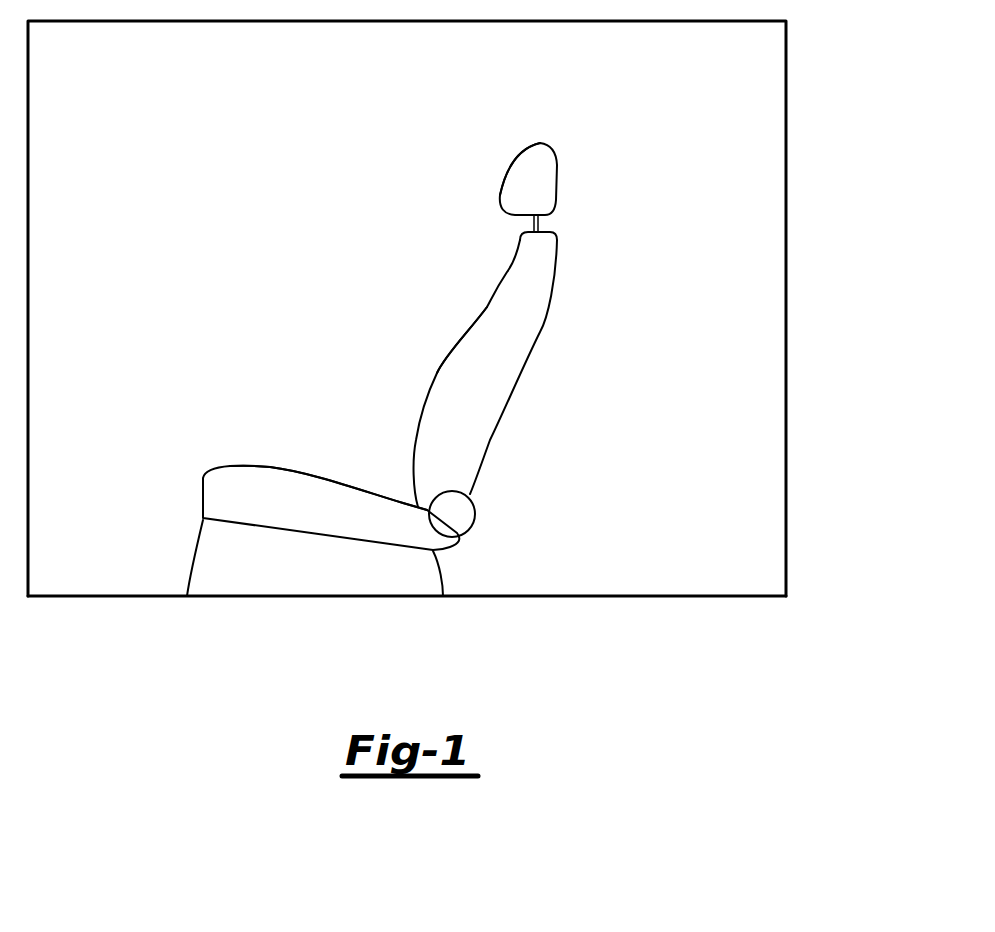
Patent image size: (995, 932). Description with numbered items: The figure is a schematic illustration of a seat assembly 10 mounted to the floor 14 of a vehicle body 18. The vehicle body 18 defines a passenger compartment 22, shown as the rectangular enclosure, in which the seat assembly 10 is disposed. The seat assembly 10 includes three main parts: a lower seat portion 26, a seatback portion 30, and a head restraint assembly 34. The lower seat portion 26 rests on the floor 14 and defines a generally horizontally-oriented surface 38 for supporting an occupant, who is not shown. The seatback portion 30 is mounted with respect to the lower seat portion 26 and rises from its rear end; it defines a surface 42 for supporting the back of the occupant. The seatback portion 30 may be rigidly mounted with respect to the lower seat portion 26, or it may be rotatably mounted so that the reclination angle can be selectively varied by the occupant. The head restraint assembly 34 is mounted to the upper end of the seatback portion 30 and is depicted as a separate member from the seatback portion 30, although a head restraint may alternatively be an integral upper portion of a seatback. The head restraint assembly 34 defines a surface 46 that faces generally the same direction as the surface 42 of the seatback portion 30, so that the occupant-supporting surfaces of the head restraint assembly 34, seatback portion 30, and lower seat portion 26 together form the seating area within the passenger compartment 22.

The seat assembly 10 is at (630, 215).
The floor 14 is at (608, 596).
The vehicle body 18 is at (787, 243).
The passenger compartment 22 is at (283, 291).
The lower seat portion 26 is at (222, 492).
The seatback portion 30 is at (515, 330).
The head restraint assembly 34 is at (545, 170).
The horizontally-oriented surface 38 is at (292, 460).
The surface 42 is at (455, 337).
The surface 46 is at (498, 172).